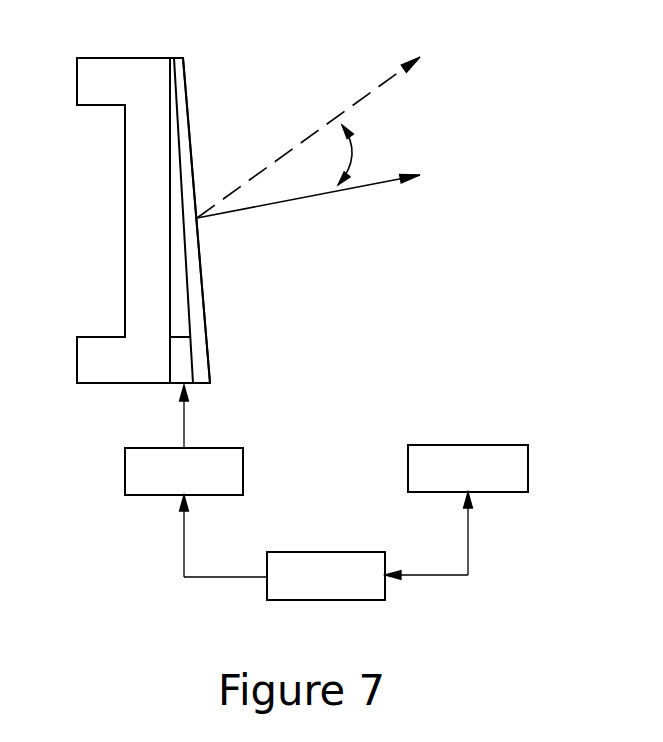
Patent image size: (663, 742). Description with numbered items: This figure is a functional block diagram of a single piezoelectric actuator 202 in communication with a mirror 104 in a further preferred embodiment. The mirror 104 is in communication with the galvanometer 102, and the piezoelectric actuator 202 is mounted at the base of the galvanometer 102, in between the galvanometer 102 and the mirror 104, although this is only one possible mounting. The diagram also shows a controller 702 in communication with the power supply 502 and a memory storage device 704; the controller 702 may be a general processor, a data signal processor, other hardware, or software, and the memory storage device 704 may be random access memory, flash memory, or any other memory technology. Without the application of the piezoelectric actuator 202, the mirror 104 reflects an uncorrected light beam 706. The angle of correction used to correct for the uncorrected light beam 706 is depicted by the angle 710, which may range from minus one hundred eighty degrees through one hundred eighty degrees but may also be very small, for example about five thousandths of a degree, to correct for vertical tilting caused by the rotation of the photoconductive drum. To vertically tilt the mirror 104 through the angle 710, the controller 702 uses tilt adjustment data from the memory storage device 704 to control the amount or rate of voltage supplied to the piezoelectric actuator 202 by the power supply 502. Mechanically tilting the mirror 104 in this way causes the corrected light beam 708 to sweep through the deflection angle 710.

The galvanometer 102 is at (90, 57).
The mirror 104 is at (188, 106).
The piezoelectric actuator 202 is at (190, 387).
The power supply 502 is at (243, 448).
The controller 702 is at (385, 552).
The memory storage device 704 is at (528, 445).
The uncorrected light beam 706 is at (316, 202).
The corrected light beam 708 is at (320, 128).
The angle 710 is at (354, 146).